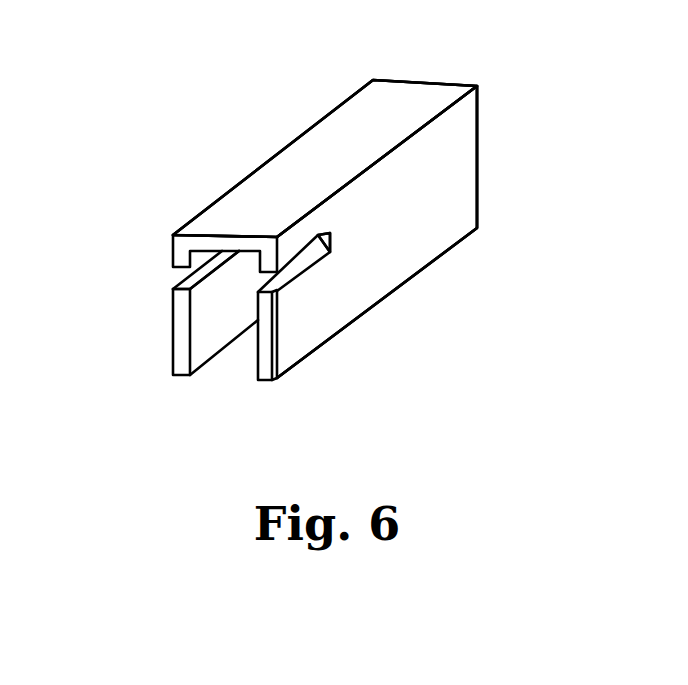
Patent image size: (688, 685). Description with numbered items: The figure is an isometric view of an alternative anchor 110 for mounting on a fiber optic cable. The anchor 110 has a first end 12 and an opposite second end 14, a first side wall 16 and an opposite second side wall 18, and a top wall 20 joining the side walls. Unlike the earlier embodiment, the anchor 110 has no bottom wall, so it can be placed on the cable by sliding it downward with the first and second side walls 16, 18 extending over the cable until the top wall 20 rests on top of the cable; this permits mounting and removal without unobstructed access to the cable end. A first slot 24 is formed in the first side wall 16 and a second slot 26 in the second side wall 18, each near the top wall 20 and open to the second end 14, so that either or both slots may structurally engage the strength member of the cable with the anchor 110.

The anchor 110 is at (296, 108).
The first end 12 is at (479, 160).
The top wall 20 is at (402, 95).
The first side wall 16 is at (423, 240).
The second side wall 18 is at (172, 328).
The second end 14 is at (263, 357).
The second slot 26 is at (187, 278).
The first slot 24 is at (303, 258).